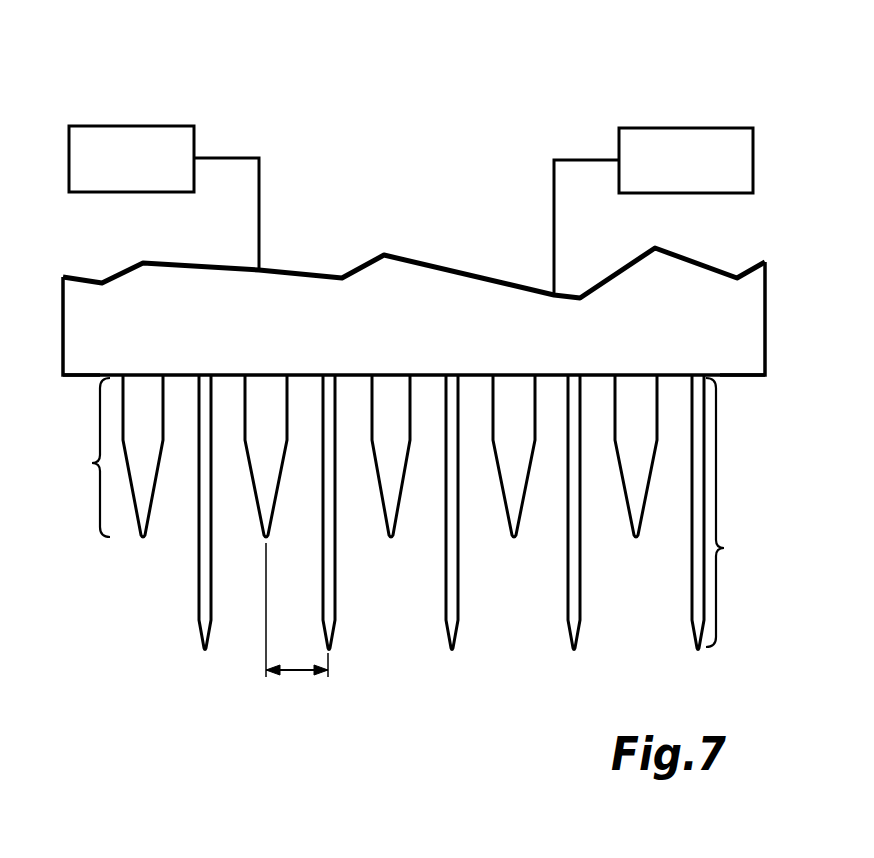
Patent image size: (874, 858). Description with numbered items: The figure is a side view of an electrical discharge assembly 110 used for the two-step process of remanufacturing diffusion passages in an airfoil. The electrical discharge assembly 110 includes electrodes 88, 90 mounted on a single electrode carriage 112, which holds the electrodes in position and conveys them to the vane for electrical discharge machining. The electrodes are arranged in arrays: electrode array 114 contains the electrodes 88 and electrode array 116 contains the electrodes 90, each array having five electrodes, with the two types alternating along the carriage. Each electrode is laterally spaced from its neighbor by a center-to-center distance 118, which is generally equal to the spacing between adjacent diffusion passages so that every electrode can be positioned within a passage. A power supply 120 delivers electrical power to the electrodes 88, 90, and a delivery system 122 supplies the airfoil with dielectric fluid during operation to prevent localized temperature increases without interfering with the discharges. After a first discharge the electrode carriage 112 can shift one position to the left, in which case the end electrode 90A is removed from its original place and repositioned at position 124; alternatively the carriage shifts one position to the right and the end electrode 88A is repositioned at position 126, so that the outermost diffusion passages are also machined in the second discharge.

The electrical discharge assembly 110 is at (423, 479).
The electrode carriage 112 is at (404, 333).
The electrode array 114 is at (736, 512).
The electrode array 116 is at (81, 457).
The center-to-center distance 118 is at (296, 673).
The power supply 120 is at (150, 126).
The delivery system 122 is at (663, 128).
The position 124 is at (781, 386).
The position 126 is at (90, 379).
The electrode 88 is at (452, 652).
The electrode 88A is at (698, 652).
The electrode 90 is at (392, 540).
The electrode 90A is at (148, 528).